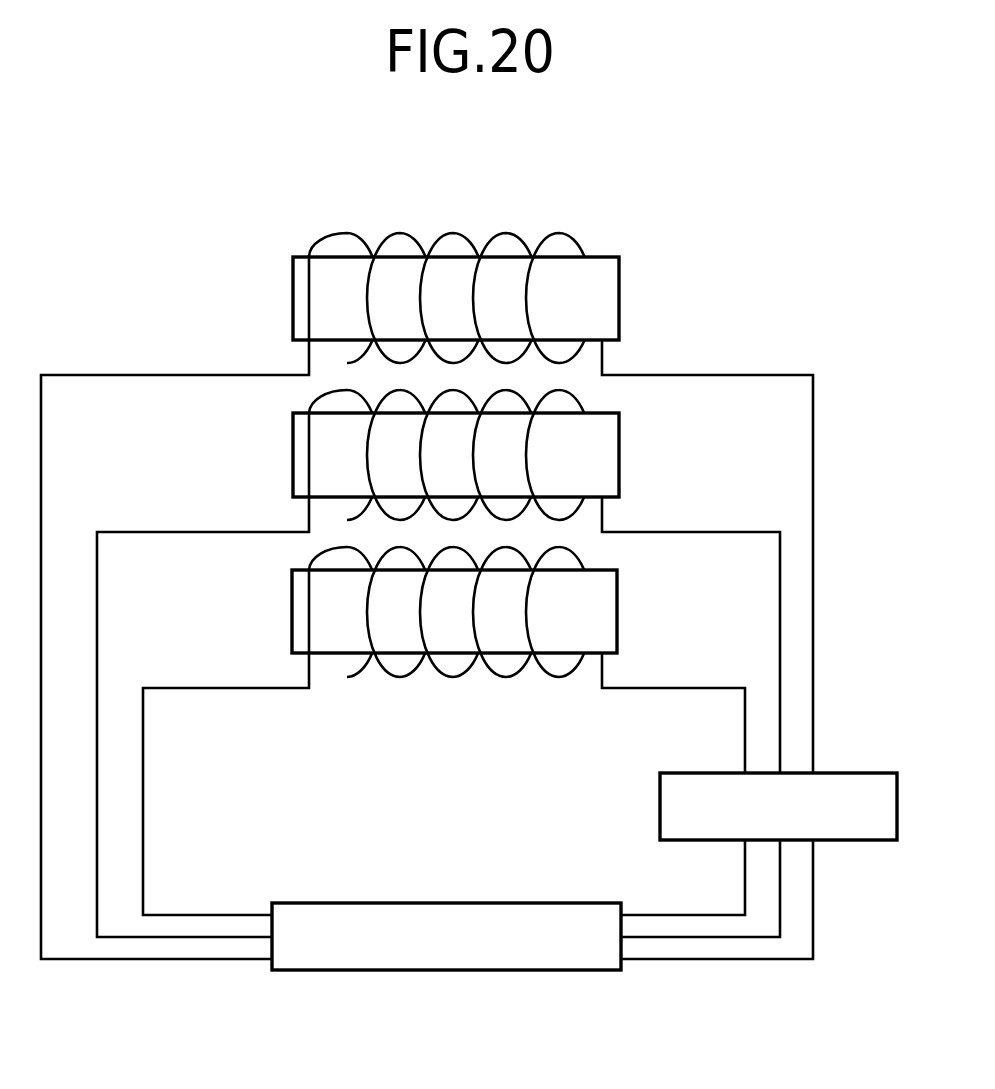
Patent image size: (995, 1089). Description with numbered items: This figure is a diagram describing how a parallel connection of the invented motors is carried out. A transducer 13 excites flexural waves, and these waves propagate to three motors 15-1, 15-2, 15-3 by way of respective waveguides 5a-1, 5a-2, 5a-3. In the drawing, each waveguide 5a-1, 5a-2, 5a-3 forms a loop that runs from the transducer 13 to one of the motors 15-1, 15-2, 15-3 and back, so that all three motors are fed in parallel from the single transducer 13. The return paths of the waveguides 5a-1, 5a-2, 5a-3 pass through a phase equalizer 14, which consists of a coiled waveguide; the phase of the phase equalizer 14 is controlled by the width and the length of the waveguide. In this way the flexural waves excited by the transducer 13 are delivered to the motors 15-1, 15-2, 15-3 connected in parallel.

The motor 15-1 is at (620, 282).
The motor 15-2 is at (620, 433).
The motor 15-3 is at (618, 593).
The waveguide 5a-1 is at (155, 376).
The waveguide 5a-2 is at (153, 534).
The waveguide 5a-3 is at (202, 689).
The transducer 13 is at (572, 971).
The phase equalizer 14 is at (867, 842).